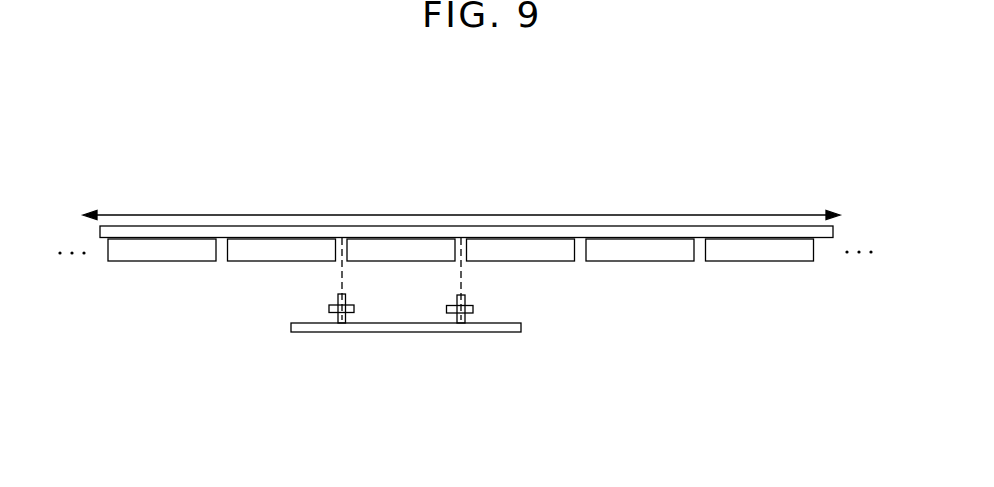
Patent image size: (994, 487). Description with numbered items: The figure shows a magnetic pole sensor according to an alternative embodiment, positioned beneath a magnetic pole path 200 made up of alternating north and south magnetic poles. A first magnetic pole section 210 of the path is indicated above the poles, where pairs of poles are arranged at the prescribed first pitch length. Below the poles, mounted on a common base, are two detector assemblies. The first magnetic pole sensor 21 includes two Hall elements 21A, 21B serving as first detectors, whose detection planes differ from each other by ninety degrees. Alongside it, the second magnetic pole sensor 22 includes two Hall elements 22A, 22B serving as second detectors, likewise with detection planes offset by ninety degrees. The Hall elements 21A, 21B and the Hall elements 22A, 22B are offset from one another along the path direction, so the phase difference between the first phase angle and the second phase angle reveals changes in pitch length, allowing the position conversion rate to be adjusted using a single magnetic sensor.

The magnetic pole path 200 is at (855, 232).
The first magnetic pole section 210 is at (693, 216).
The first magnetic pole sensor 21 is at (490, 364).
The Hall element (first detector) 21A is at (472, 317).
The Hall element (first detector) 21B is at (455, 343).
The second magnetic pole sensor 22 is at (323, 363).
The Hall element (second detector) 22A is at (337, 318).
The Hall element (second detector) 22B is at (355, 343).